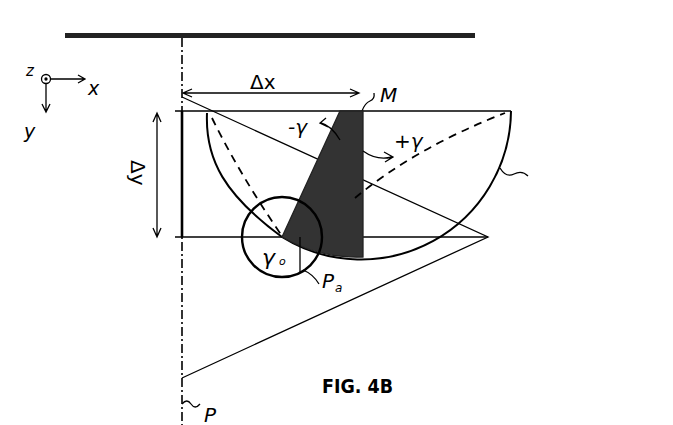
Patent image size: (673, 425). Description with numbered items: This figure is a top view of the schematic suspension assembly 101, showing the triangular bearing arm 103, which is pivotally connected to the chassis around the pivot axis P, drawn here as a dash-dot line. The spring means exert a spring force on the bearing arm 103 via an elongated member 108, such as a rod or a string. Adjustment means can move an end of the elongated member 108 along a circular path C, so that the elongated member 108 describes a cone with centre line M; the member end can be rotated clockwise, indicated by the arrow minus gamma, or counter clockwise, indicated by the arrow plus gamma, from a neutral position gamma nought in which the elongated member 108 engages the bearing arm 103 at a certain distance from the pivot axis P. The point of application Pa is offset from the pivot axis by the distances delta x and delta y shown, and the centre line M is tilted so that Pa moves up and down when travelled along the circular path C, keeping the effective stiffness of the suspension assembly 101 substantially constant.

The suspension assembly 101 is at (567, 104).
The triangular bearing arm 103 is at (247, 327).
The elongated member 108 is at (273, 142).